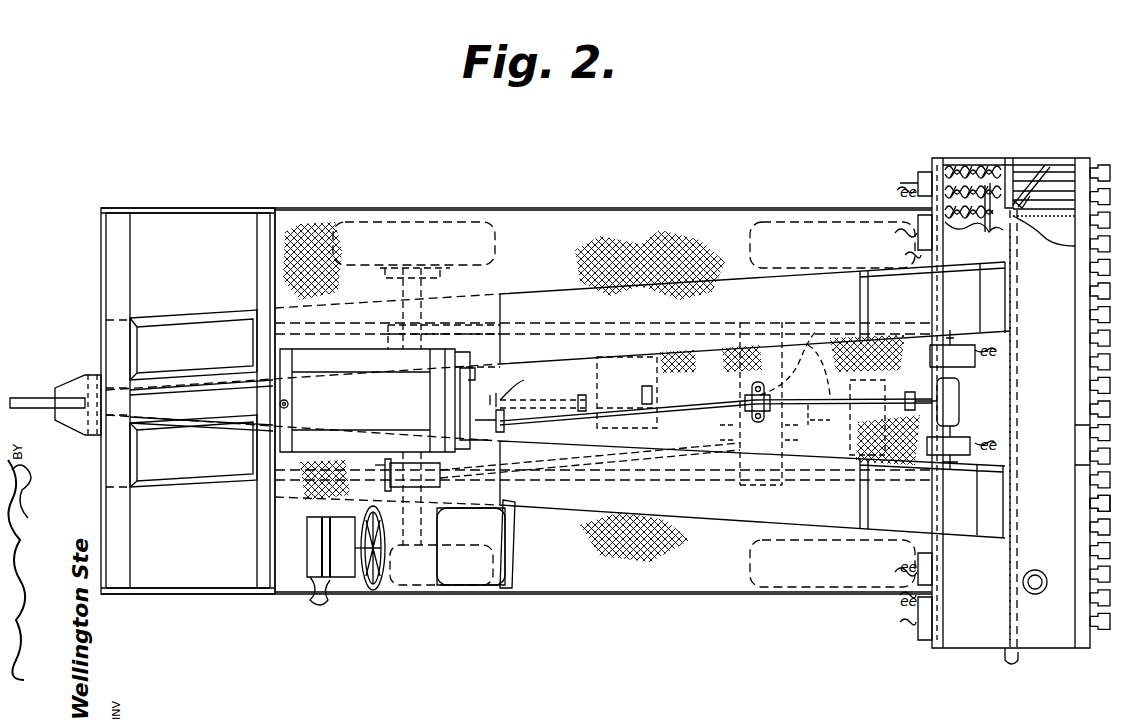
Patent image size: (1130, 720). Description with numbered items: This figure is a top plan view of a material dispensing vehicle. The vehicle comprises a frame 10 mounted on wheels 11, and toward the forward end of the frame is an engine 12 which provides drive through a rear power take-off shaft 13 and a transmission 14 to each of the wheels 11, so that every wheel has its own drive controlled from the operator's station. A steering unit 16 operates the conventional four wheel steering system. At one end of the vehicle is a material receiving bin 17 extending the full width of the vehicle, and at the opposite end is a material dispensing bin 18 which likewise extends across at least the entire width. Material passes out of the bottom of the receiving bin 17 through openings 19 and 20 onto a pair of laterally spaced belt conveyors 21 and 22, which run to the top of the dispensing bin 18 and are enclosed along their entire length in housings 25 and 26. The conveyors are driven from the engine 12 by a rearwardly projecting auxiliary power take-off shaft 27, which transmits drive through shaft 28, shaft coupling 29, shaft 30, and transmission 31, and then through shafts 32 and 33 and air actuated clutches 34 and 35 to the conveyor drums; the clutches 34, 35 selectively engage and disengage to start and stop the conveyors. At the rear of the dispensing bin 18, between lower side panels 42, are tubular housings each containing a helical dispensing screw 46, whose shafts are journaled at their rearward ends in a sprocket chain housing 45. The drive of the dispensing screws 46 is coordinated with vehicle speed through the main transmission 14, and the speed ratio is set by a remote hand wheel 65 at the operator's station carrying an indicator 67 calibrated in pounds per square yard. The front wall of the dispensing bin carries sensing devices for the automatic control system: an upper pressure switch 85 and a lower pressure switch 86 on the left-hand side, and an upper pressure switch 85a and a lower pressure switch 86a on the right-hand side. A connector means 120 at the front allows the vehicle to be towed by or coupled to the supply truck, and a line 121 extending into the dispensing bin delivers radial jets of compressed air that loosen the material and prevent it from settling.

The frame 10 is at (655, 332).
The wheels 11 is at (455, 222).
The engine 12 is at (373, 414).
The rear power take-off shaft 13 is at (545, 398).
The transmission 14 is at (620, 375).
The steering unit 16 is at (307, 566).
The material receiving bin 17 is at (200, 270).
The material dispensing bin 18 is at (1071, 289).
The opening 19 is at (140, 350).
The opening 20 is at (140, 454).
The belt conveyor 21 is at (205, 465).
The belt conveyor 22 is at (205, 334).
The housing 25 is at (568, 510).
The housing 26 is at (528, 295).
The auxiliary power take-off shaft 27 is at (498, 400).
The shaft 28 is at (560, 426).
The shaft coupling 29 is at (750, 433).
The shaft 30 is at (815, 405).
The transmission 31 is at (960, 398).
The shaft 32 is at (962, 435).
The shaft 33 is at (930, 372).
The air actuated clutch 34 is at (963, 462).
The air actuated clutch 35 is at (965, 345).
The lower side panels 42 is at (1030, 190).
The sprocket chain housing 45 is at (1080, 512).
The helical dispensing screw 46 is at (983, 168).
The remote hand wheel 65 is at (385, 487).
The indicator 67 is at (440, 488).
The upper pressure switch 85 is at (918, 624).
The upper pressure switch 85a is at (918, 178).
The lower pressure switch 86 is at (918, 562).
The lower pressure switch 86a is at (918, 240).
The connector means 120 is at (31, 399).
The line 121 is at (1013, 424).